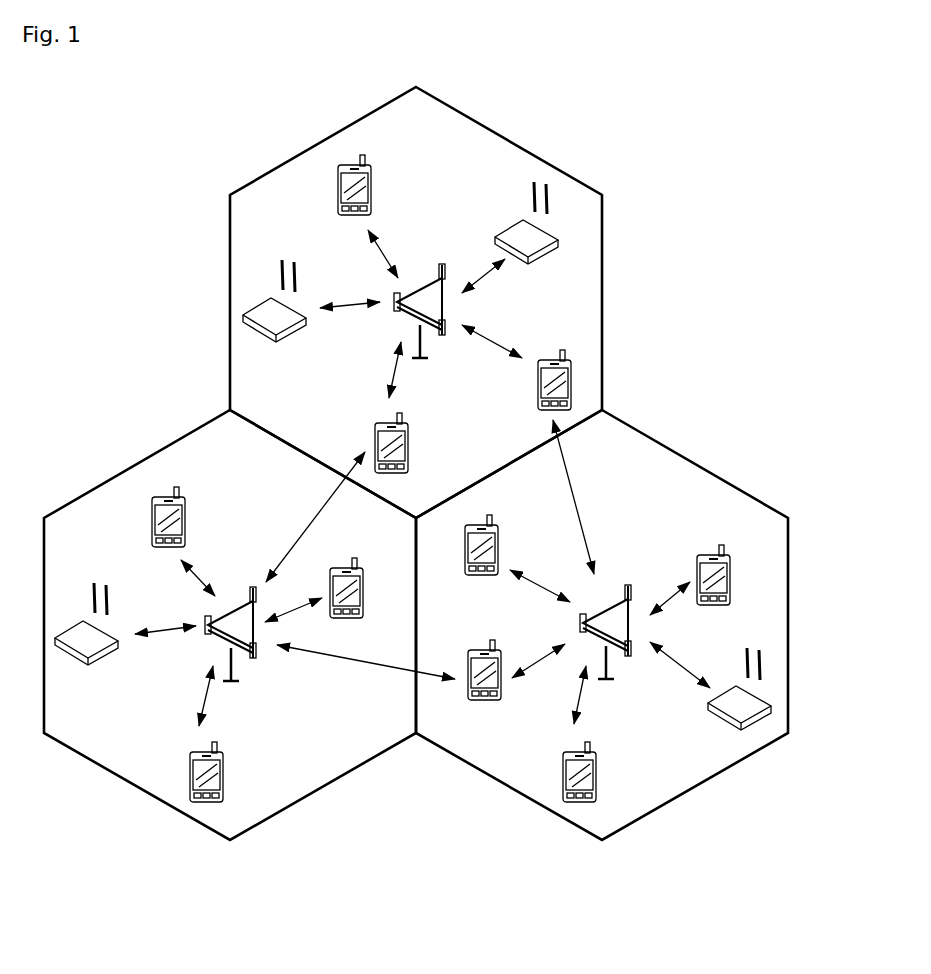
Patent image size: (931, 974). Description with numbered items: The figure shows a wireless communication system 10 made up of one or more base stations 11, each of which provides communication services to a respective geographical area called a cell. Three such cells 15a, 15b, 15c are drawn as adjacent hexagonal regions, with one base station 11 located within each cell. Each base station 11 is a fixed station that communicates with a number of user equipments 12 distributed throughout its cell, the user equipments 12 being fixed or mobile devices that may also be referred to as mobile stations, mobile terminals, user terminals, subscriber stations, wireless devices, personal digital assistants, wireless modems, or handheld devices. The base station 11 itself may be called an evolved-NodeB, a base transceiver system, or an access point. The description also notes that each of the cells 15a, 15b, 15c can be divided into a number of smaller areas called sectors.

The wireless communication system 10 is at (688, 197).
The base station 11 is at (436, 270).
The user equipment 12 is at (371, 188).
The cell 15a is at (603, 290).
The cell 15b is at (720, 476).
The cell 15c is at (113, 477).